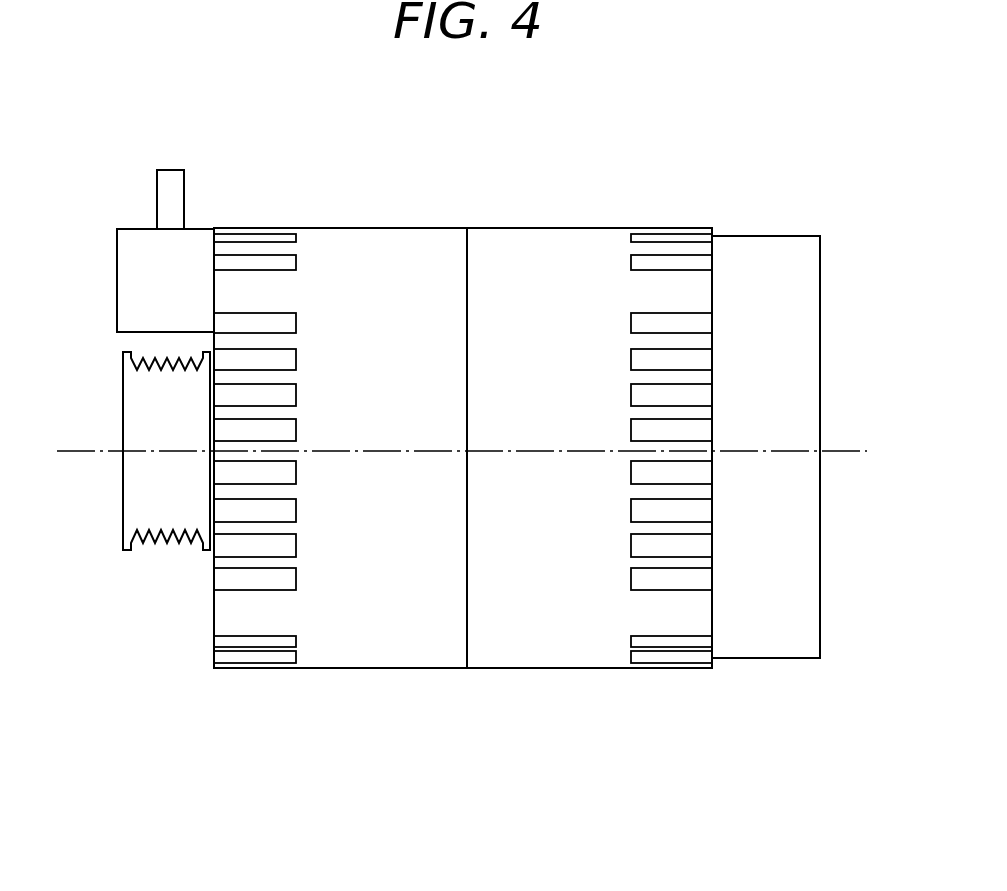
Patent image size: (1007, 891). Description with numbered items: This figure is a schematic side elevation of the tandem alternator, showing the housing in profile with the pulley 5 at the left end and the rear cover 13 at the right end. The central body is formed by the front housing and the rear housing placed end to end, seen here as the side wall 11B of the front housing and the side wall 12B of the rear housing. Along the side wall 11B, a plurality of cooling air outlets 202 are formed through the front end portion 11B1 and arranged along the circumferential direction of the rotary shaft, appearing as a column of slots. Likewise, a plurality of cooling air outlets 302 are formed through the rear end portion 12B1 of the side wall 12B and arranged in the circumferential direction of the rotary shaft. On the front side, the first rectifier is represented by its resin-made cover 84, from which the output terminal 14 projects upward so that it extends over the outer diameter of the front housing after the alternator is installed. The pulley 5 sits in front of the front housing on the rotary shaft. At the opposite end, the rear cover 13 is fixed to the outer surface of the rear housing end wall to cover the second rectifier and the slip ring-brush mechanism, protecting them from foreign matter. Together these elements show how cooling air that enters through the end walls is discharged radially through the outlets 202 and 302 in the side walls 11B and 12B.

The output terminal 14 is at (168, 178).
The cooling air outlets 202 is at (260, 237).
The cooling air outlets 302 is at (663, 235).
The rear cover 13 is at (765, 270).
The resin-made cover 84 is at (126, 265).
The pulley 5 is at (123, 395).
The side wall of the front housing 11B is at (398, 635).
The side wall of the rear housing 12B is at (563, 635).
The front end portion of the side wall 11B1 is at (283, 610).
The rear end portion of the side wall 12B1 is at (680, 612).